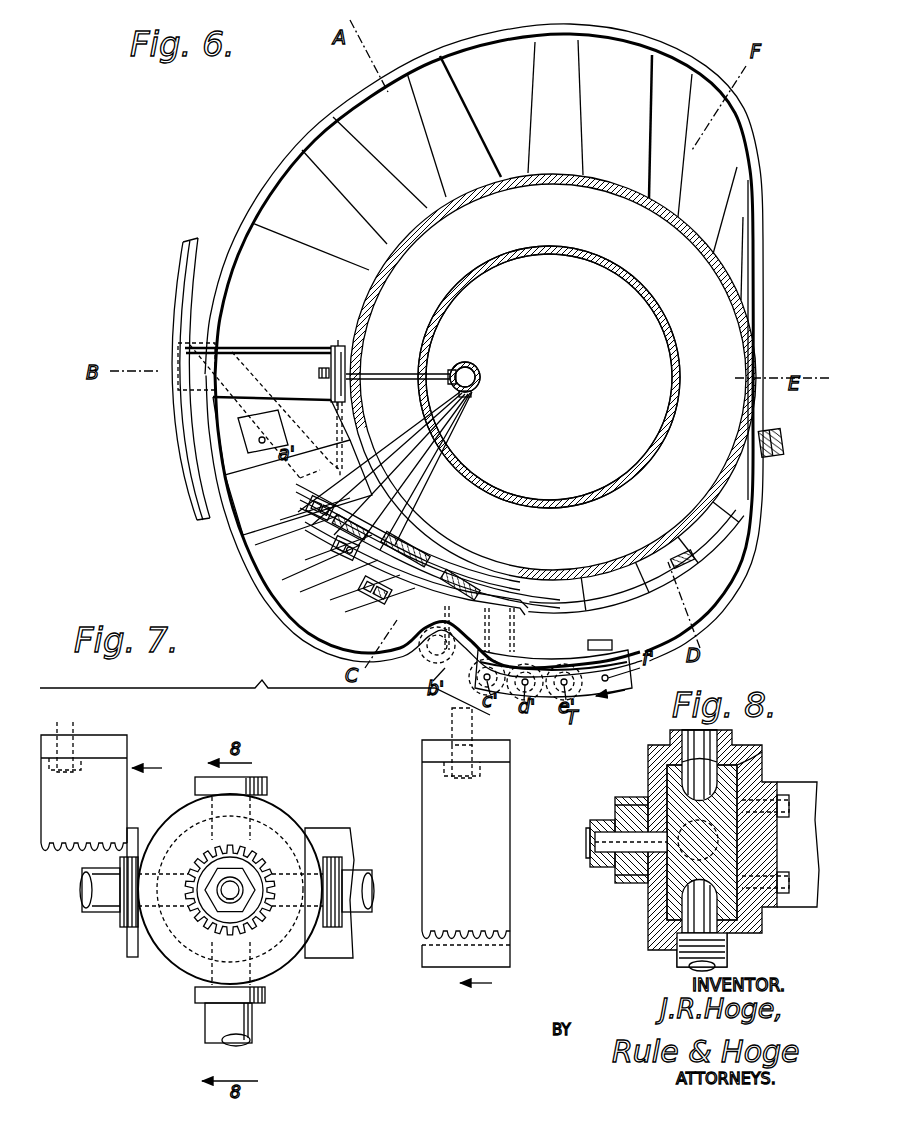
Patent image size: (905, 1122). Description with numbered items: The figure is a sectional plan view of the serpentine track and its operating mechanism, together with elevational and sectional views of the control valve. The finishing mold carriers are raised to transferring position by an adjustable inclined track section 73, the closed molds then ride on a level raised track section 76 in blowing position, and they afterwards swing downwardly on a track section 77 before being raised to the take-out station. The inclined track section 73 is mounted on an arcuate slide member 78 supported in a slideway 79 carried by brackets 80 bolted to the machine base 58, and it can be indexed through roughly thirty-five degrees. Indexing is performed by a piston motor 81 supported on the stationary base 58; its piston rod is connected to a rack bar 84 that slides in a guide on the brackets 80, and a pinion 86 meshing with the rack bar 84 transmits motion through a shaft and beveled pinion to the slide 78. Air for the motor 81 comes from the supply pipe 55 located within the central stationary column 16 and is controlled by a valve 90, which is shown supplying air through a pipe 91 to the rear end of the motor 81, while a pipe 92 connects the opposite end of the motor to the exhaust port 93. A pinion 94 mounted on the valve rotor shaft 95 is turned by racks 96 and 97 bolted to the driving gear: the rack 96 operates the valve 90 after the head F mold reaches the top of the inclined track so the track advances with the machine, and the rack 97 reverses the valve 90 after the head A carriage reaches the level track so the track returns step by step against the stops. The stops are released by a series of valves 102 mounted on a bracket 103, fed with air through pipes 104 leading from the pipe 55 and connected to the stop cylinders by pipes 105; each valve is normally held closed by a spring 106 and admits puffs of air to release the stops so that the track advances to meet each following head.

In FIG. 6, the level raised track section 76 is at (292, 160).
In FIG. 6, the track section 77 is at (764, 272).
In FIG. 6, the adjustable inclined track section 73 is at (284, 633).
In FIG. 6, the base 58 is at (399, 258).
In FIG. 6, the central stationary column 16 is at (468, 286).
In FIG. 6, the pipe 55 is at (471, 365).
In FIG. 6, the valve 90 is at (350, 368).
In FIG. 7, the valve 90 is at (288, 966).
In FIG. 8, the valve 90 is at (764, 758).
In FIG. 6, the pipe 91 is at (262, 338).
In FIG. 7, the pipe 91 is at (100, 902).
In FIG. 6, the pipe 92 is at (336, 410).
In FIG. 7, the pipe 92 is at (352, 875).
In FIG. 7, the exhaust port 93 is at (256, 782).
In FIG. 8, the exhaust port 93 is at (702, 738).
In FIG. 6, the pinion 94 is at (318, 373).
In FIG. 7, the pinion 94 is at (254, 858).
In FIG. 8, the pinion 94 is at (626, 798).
In FIG. 7, the valve rotor shaft 95 is at (231, 888).
In FIG. 8, the valve rotor shaft 95 is at (628, 845).
In FIG. 6, the rack 96 is at (690, 572).
In FIG. 7, the rack 96 is at (112, 807).
In FIG. 6, the rack 97 is at (771, 431).
In FIG. 7, the rack 97 is at (494, 925).
In FIG. 6, the piston motor 81 is at (226, 412).
In FIG. 6, the pipes 104 is at (428, 468).
In FIG. 6, the pinion 86 is at (426, 552).
In FIG. 6, the rack bar 84 is at (471, 576).
In FIG. 6, the pipes 105 is at (506, 588).
In FIG. 6, the valves 102 is at (310, 522).
In FIG. 6, the bracket 103 is at (326, 547).
In FIG. 6, the spring 106 is at (356, 562).
In FIG. 6, the arcuate slide member 78 is at (420, 656).
In FIG. 6, the slideway 79 is at (622, 652).
In FIG. 6, the brackets 80 is at (598, 585).